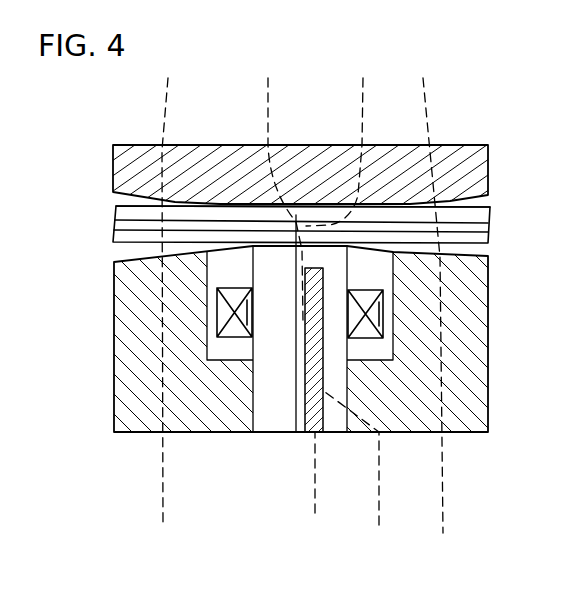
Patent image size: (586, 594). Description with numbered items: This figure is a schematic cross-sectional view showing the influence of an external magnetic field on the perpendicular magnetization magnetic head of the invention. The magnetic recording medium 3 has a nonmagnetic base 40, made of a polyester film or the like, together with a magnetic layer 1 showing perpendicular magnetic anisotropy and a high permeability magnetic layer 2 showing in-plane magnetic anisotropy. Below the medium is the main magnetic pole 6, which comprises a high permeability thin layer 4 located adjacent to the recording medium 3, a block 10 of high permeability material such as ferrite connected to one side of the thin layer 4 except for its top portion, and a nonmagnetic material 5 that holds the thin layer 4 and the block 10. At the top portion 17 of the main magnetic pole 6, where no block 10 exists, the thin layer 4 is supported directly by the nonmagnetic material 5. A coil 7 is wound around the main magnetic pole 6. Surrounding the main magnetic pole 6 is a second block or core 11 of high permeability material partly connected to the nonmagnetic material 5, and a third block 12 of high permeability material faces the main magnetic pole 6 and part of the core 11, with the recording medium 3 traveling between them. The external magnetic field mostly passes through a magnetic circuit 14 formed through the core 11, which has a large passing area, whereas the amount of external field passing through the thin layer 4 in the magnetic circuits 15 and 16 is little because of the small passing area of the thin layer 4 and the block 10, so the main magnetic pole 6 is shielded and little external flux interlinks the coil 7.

The magnetic layer 1 is at (316, 243).
The magnetic layer 2 is at (483, 227).
The magnetic recording medium 3 is at (334, 224).
The high permeability thin layer 4 is at (298, 350).
The nonmagnetic material 5 is at (280, 424).
The main magnetic pole 6 is at (253, 466).
The coil 7 is at (235, 331).
The block 10 is at (318, 310).
The core 11 is at (130, 402).
The third block 12 is at (383, 157).
The magnetic circuit 14 is at (164, 478).
The magnetic circuit 15 is at (316, 516).
The magnetic circuit 16 is at (381, 505).
The top portion 17 is at (335, 258).
The nonmagnetic base 40 is at (482, 210).